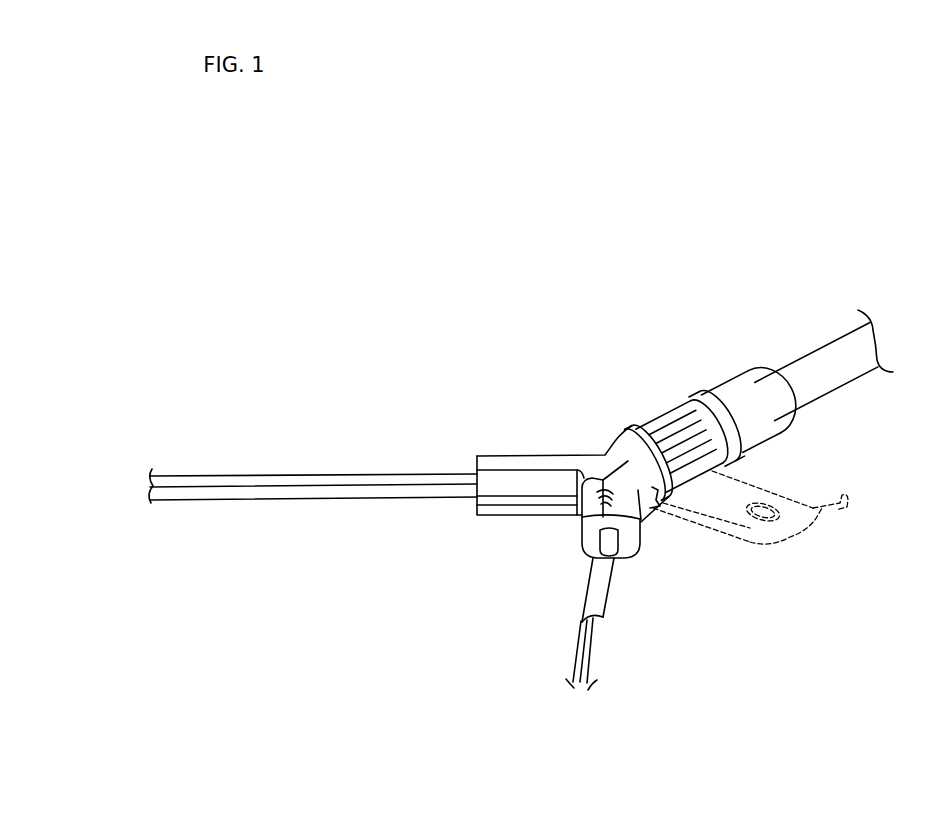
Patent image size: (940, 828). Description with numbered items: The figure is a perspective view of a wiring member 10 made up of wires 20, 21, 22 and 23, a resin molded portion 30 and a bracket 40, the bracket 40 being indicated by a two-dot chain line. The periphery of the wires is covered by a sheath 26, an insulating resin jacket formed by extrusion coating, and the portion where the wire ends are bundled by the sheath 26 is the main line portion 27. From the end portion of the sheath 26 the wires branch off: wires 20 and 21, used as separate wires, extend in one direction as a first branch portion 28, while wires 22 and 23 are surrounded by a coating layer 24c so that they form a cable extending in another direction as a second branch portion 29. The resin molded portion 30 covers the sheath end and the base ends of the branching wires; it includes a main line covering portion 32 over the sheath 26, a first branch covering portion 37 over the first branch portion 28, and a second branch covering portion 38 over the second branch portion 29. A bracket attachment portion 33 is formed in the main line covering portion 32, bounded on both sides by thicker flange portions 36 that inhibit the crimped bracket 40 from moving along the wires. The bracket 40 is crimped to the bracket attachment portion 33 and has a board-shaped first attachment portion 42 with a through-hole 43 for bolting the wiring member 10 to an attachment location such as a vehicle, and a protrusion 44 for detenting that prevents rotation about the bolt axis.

The wiring member 10 is at (831, 232).
The wire 20 is at (344, 472).
The wire 21 is at (377, 492).
The wire 22 is at (574, 646).
The wire 23 is at (577, 666).
The coating layer 24c is at (598, 608).
The sheath 26 is at (824, 353).
The main line portion 27 is at (811, 348).
The first branch portion 28 is at (313, 454).
The second branch portion 29 is at (589, 624).
The resin molded portion 30 is at (554, 494).
The main line covering portion 32 is at (747, 385).
The bracket attachment portion 33 is at (667, 428).
The flange portion 36 is at (622, 437).
The first branch covering portion 37 is at (508, 455).
The second branch covering portion 38 is at (652, 525).
The bracket 40 is at (786, 534).
The first attachment portion 42 is at (755, 482).
The through-hole 43 is at (751, 522).
The protrusion 44 is at (850, 500).